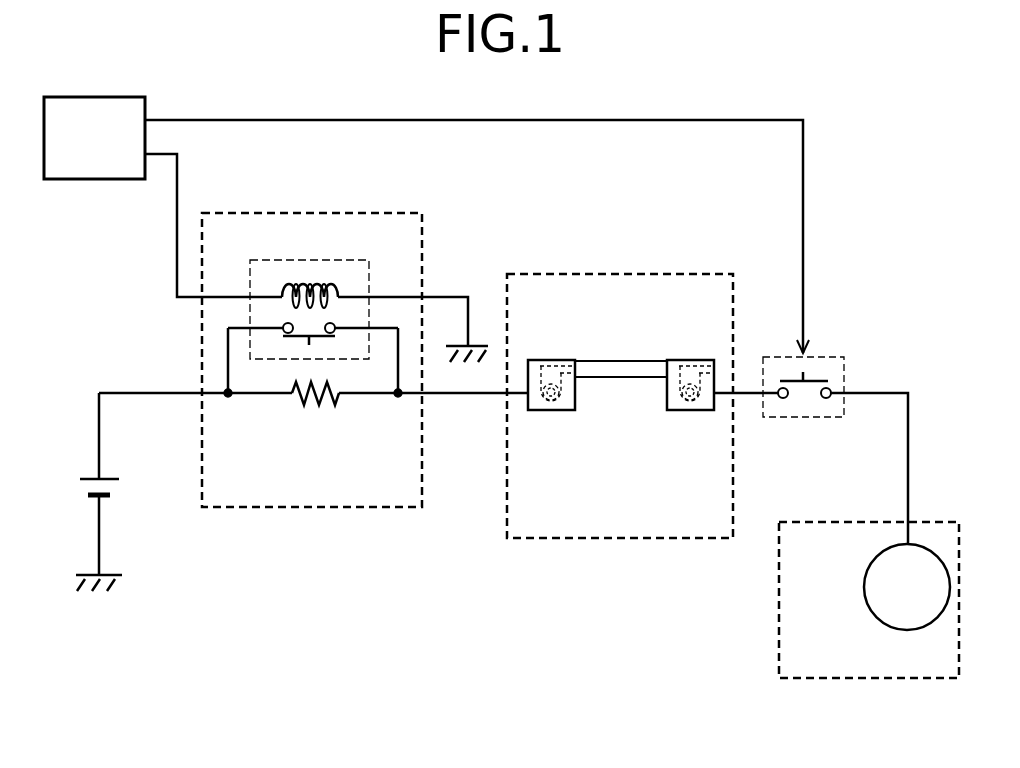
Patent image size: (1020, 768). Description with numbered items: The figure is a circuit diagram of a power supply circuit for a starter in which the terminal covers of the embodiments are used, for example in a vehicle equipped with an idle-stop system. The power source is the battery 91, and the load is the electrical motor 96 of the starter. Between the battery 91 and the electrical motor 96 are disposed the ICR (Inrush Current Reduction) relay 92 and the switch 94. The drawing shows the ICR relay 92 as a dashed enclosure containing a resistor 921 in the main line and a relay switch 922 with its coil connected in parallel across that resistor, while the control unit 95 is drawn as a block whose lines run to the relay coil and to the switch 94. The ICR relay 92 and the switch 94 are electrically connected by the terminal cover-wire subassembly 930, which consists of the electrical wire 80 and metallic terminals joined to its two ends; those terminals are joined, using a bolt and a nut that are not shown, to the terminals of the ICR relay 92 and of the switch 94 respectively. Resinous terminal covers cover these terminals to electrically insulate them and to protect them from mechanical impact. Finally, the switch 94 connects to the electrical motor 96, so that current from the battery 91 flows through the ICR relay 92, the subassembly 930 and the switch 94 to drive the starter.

The electrical wire 80 is at (614, 368).
The battery 91 is at (93, 478).
The ICR relay 92 is at (312, 325).
The resistor 921 is at (298, 398).
The relay switch 922 is at (318, 258).
The terminal cover-wire subassembly 930 is at (620, 371).
The switch 94 is at (805, 417).
The ECU 95 is at (92, 181).
The electrical motor 96 is at (864, 587).